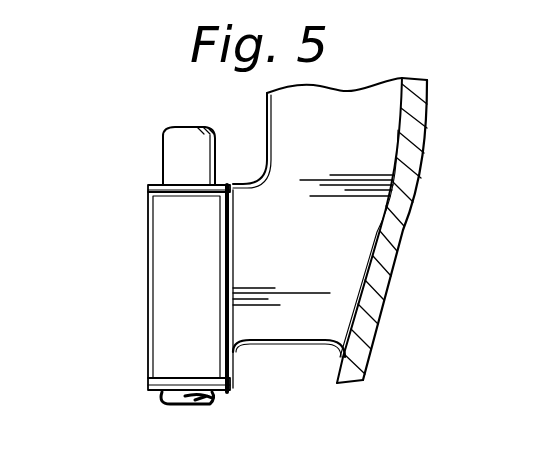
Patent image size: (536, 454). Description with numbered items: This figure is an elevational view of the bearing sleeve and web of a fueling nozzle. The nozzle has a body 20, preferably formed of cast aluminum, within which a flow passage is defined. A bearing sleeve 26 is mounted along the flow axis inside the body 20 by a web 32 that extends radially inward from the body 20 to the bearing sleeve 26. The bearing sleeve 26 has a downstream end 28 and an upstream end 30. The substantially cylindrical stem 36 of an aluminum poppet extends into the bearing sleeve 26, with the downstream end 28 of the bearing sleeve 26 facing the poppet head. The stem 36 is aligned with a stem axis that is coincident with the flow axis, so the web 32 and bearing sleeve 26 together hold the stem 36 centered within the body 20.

The body 20 is at (397, 203).
The bearing sleeve 26 is at (170, 272).
The downstream end 28 is at (157, 390).
The upstream end 30 is at (163, 183).
The web 32 is at (302, 318).
The stem 36 is at (183, 138).